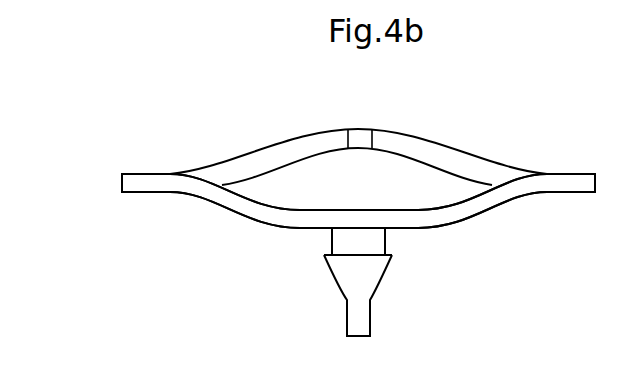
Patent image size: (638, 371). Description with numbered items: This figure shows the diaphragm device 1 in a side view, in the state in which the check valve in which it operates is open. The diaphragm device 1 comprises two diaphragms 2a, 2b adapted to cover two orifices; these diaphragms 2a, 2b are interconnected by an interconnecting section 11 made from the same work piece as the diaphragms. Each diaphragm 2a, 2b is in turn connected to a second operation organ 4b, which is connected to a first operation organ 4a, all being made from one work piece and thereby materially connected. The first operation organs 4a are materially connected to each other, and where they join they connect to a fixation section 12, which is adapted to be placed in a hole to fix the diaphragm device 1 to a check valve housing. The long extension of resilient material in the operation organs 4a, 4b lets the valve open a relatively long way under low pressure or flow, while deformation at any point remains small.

The diaphragm device 1 is at (315, 203).
The diaphragm 2a is at (270, 148).
The diaphragm 2b is at (444, 147).
The first operation organ 4a is at (242, 208).
The second operation organ 4b is at (176, 172).
The interconnecting section 11 is at (358, 128).
The fixation section 12 is at (360, 283).